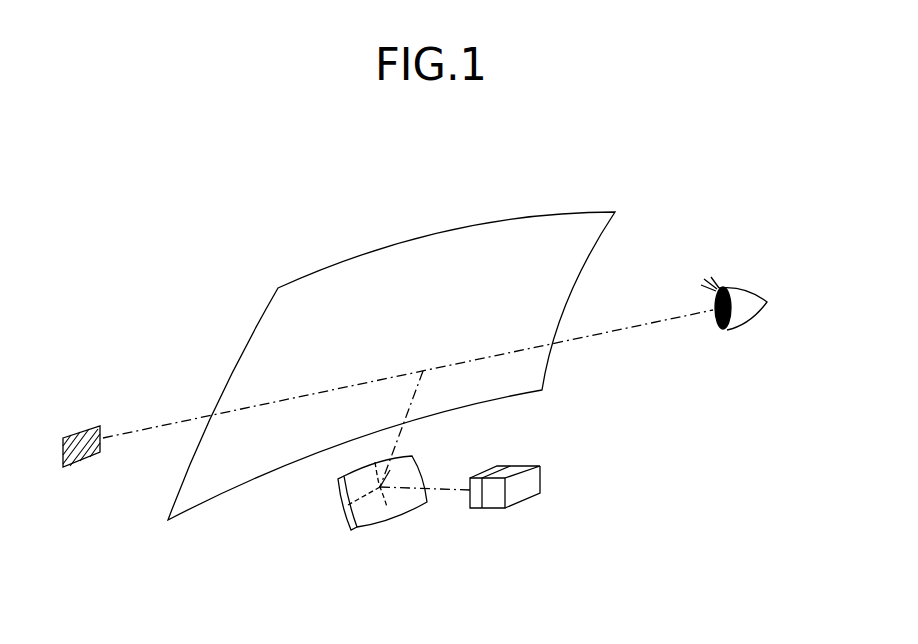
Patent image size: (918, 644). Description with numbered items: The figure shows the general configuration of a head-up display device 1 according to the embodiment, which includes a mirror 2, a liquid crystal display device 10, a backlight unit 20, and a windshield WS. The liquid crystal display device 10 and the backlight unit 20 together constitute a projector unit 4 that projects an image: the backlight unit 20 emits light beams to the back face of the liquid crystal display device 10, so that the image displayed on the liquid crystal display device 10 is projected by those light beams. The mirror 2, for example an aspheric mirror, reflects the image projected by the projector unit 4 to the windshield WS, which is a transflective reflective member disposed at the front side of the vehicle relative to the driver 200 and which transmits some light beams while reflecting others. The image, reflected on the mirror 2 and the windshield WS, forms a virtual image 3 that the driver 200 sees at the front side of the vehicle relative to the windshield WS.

The head-up display device 1 is at (253, 173).
The windshield WS is at (517, 214).
The mirror 2 is at (342, 520).
The virtual image 3 is at (89, 428).
The projector unit 4 is at (520, 518).
The liquid crystal display device 10 is at (475, 506).
The backlight unit 20 is at (530, 482).
The driver 200 is at (742, 275).